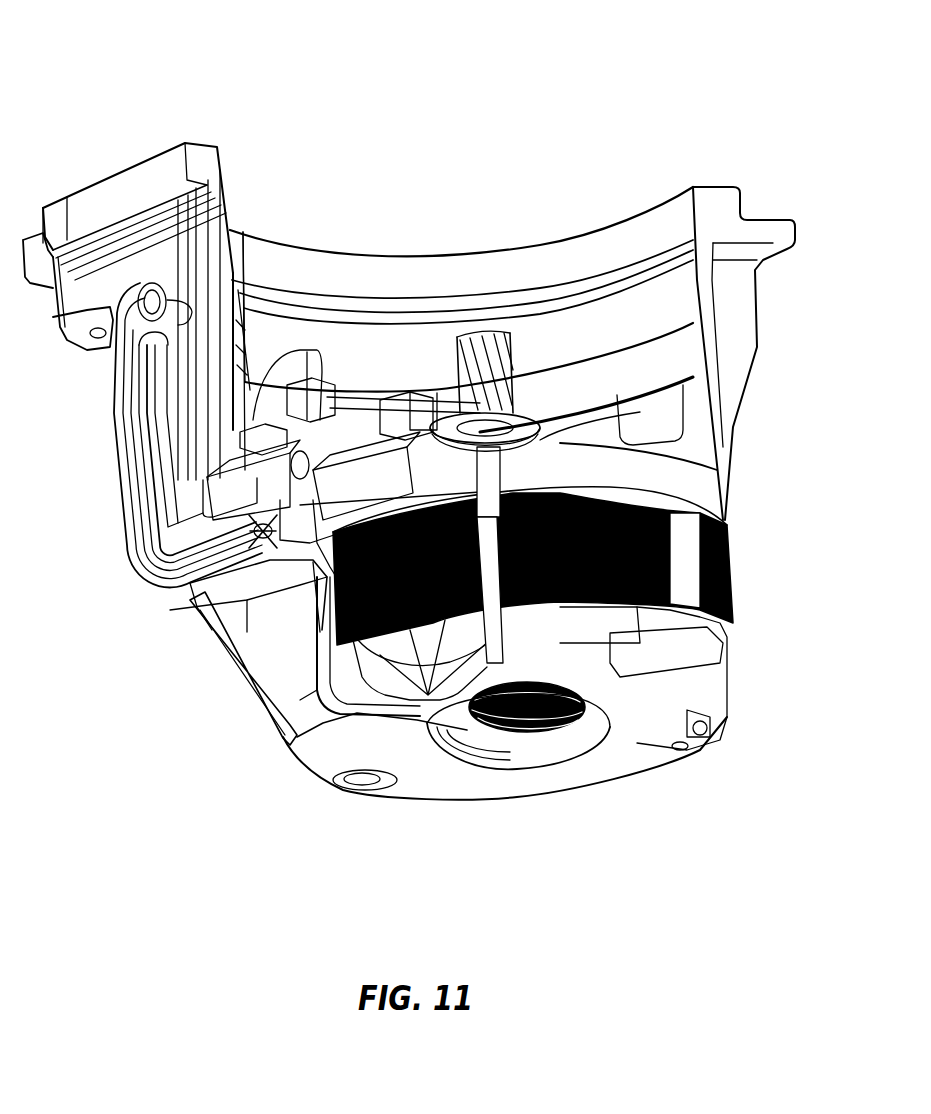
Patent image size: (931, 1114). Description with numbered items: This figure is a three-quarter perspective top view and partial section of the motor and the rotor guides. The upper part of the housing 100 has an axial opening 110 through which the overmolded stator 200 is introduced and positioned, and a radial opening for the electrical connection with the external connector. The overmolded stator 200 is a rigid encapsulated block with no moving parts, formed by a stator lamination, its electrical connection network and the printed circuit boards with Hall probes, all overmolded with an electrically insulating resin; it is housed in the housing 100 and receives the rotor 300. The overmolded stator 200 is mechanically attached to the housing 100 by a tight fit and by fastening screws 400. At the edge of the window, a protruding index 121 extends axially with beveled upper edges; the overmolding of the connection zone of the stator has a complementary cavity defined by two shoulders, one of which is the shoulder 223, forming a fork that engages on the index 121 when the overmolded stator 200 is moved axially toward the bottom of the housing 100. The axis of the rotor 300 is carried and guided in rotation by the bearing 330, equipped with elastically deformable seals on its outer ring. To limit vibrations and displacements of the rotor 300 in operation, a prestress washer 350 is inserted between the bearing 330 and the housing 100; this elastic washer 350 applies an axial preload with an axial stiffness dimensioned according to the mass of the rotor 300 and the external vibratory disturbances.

The housing 100 is at (147, 242).
The axial opening 110 is at (393, 340).
The index 121 is at (187, 600).
The overmolded stator 200 is at (633, 463).
The shoulder 223 is at (247, 555).
The rotor 300 is at (515, 355).
The bearing 330 is at (450, 413).
The prestress washer 350 is at (567, 737).
The fastening screws 400 is at (413, 680).